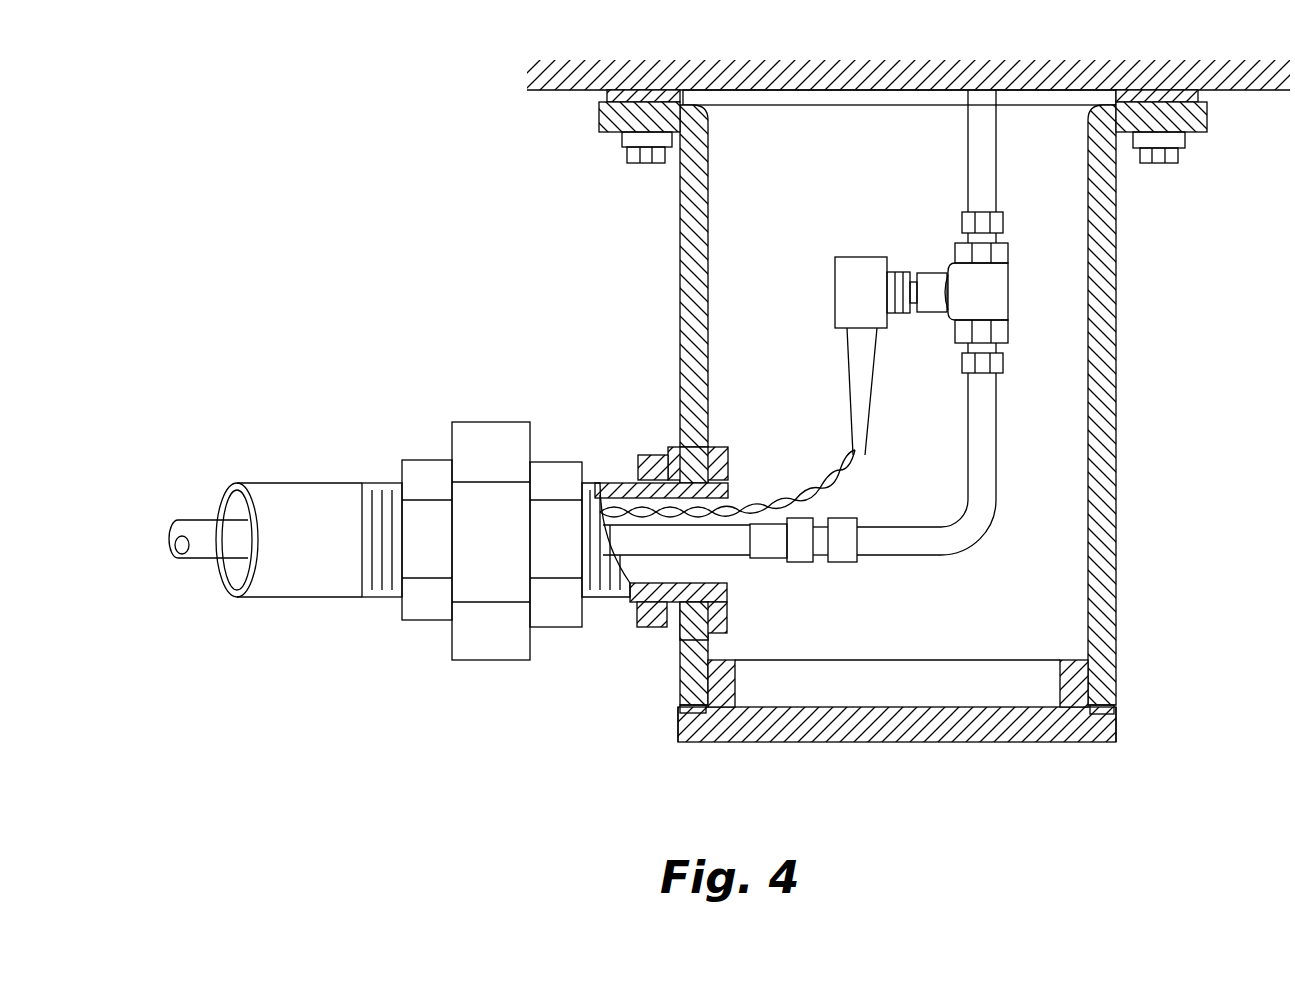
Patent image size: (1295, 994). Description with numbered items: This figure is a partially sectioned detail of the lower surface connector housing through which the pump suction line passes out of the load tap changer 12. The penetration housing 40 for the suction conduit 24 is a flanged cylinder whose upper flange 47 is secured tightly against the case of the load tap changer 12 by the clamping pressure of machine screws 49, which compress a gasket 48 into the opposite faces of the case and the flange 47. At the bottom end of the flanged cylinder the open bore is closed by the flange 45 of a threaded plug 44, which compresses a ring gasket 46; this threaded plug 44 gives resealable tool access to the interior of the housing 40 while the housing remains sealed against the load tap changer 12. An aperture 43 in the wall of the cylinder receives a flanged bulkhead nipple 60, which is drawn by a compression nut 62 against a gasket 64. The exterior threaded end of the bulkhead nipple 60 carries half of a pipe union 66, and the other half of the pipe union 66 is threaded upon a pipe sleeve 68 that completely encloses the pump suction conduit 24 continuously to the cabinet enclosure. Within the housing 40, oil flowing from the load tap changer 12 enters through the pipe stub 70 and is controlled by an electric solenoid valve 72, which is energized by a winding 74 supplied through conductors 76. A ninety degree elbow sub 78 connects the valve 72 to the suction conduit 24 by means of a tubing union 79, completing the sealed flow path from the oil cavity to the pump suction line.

The load tap changer 12 is at (918, 56).
The suction conduit 24 is at (195, 560).
The penetration housing 40 is at (1118, 490).
The aperture 43 is at (698, 585).
The threaded plug 44 is at (888, 742).
The flange 45 is at (678, 738).
The ring gasket 46 is at (680, 709).
The flange 47 is at (598, 118).
The gasket 48 is at (607, 96).
The machine screws 49 is at (634, 163).
The flanged bulkhead nipple 60 is at (730, 490).
The compression nut 62 is at (648, 455).
The gasket 64 is at (712, 448).
The pipe union 66 is at (475, 422).
The pipe sleeve 68 is at (324, 544).
The pipe stub 70 is at (967, 148).
The electric solenoid valve 72 is at (998, 302).
The winding 74 is at (880, 302).
The conductors 76 is at (848, 390).
The 90° elbow sub 78 is at (975, 528).
The tubing union 79 is at (808, 562).